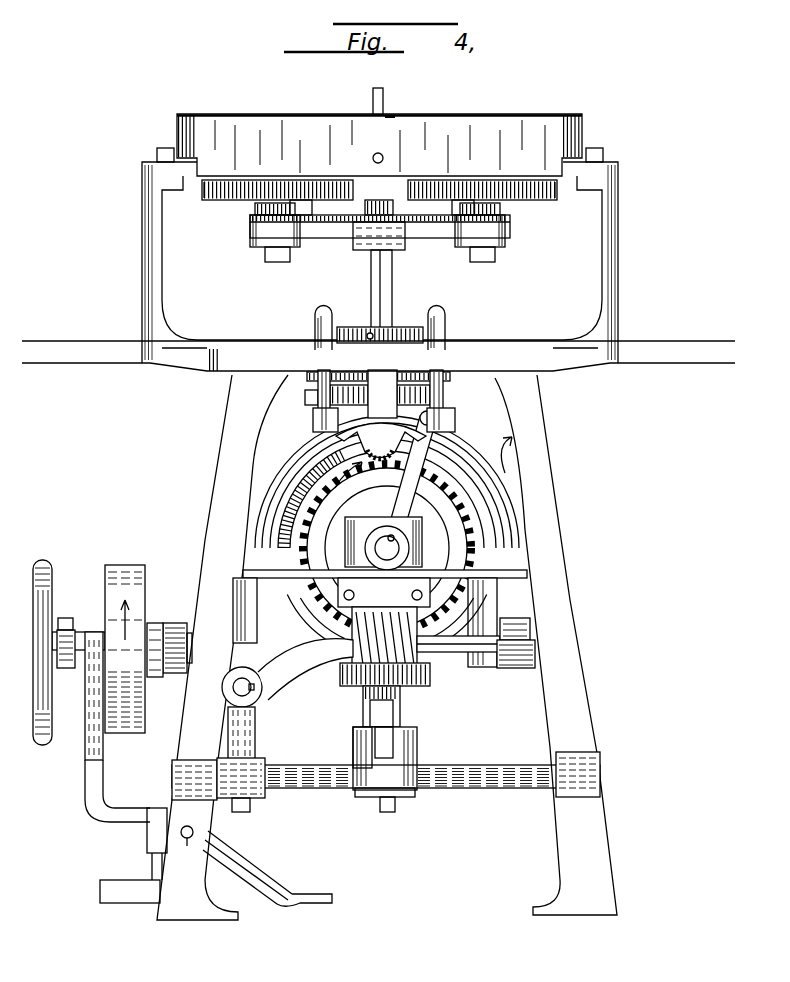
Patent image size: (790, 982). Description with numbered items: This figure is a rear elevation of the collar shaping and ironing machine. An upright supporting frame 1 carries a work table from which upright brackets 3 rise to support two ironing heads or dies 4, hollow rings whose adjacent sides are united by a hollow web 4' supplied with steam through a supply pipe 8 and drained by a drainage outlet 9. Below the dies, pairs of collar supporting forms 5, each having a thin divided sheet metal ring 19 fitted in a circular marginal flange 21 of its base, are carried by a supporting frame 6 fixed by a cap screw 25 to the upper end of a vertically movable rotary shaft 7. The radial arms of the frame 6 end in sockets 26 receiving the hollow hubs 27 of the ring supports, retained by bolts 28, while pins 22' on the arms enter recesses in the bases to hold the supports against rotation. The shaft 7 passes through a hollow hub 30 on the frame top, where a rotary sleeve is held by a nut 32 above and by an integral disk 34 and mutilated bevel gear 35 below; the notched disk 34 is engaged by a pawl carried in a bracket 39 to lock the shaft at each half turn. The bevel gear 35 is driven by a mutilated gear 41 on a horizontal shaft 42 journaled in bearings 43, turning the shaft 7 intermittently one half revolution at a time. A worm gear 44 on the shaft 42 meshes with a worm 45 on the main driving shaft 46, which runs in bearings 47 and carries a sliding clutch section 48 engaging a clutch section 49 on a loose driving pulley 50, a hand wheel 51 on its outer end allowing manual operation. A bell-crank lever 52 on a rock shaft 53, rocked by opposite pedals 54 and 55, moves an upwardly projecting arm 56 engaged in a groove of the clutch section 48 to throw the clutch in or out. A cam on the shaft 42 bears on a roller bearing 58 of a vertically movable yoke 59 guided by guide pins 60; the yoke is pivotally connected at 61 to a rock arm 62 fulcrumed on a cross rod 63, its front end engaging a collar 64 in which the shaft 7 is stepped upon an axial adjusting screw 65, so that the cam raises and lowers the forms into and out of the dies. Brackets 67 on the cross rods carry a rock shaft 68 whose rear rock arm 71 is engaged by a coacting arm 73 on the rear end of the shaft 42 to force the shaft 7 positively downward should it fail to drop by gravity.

The upright supporting frame 1 is at (531, 381).
The upright brackets 3 is at (150, 262).
The ironing heads or dies 4 is at (377, 140).
The hollow web 4' is at (400, 102).
The collar supporting forms 5 is at (226, 196).
The supporting frame 6 is at (355, 243).
The vertically movable rotary shaft 7 is at (393, 273).
The supply pipe 8 is at (376, 88).
The drainage outlet 9 is at (378, 153).
The sheet metal ring 19 is at (256, 182).
The circular marginal flange 21 is at (294, 196).
The pins 22' is at (380, 242).
The cap screw 25 is at (380, 202).
The sockets 26 is at (258, 250).
The hubs 27 is at (257, 211).
The bolts 28 is at (277, 262).
The hollow hub 30 is at (318, 376).
The nut 32 is at (352, 327).
The disk 34 is at (305, 397).
The mutilated bevel gear 35 is at (318, 422).
The bracket 39 is at (380, 383).
The mutilated gear 41 is at (510, 523).
The horizontal shaft 42 is at (400, 545).
The bearings 43 is at (362, 544).
The worm gear 44 is at (500, 548).
The worm 45 is at (420, 686).
The main driving shaft 46 is at (445, 653).
The bearings 47 is at (90, 630).
The clutch section 48 is at (177, 625).
The clutch section 49 is at (151, 668).
The driving pulley 50 is at (125, 565).
The hand wheel 51 is at (43, 748).
The bell-crank lever 52 is at (246, 870).
The rock shaft 53 is at (187, 847).
The pedal 54 is at (312, 893).
The pedal 55 is at (110, 882).
The upwardly projecting arm 56 is at (190, 645).
The roller bearing 58 is at (356, 450).
The yoke 59 is at (450, 455).
The guide pins 60 is at (315, 326).
The pivotal connection 61 is at (418, 745).
The rock arm 62 is at (412, 792).
The cross rod 63 is at (485, 789).
The collar 64 is at (355, 745).
The axial adjusting screw 65 is at (388, 813).
The brackets 67 is at (238, 742).
The rock shaft 68 is at (238, 688).
The rock arm 71 is at (312, 664).
The coacting arm 73 is at (442, 487).